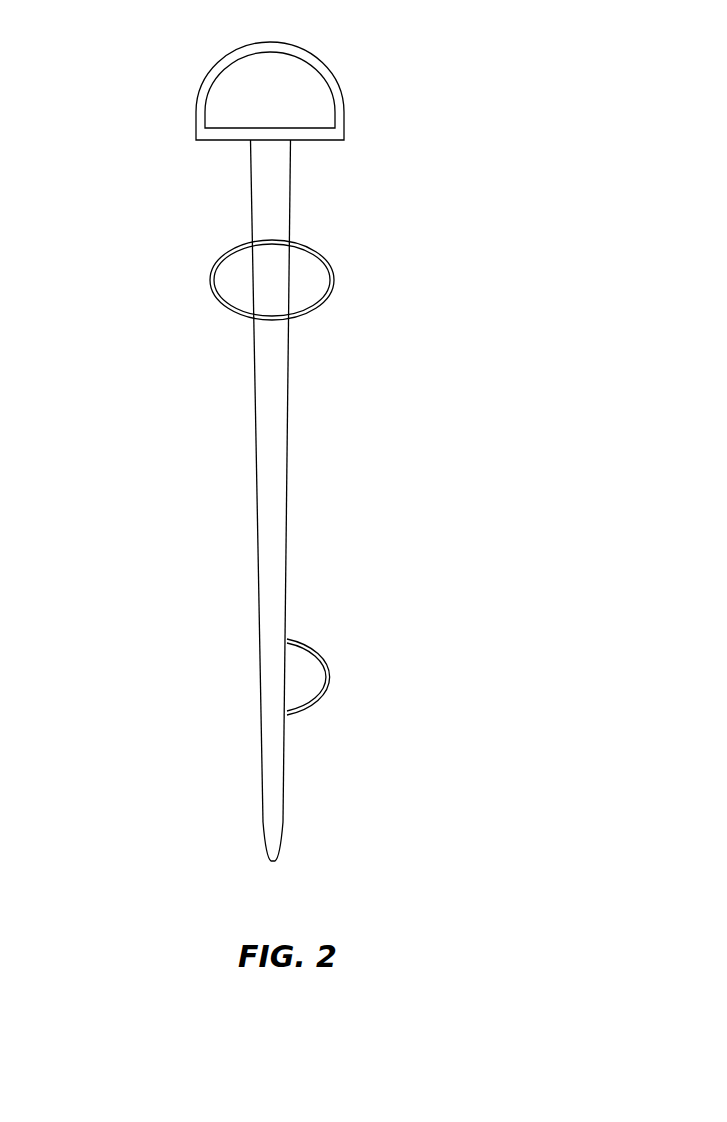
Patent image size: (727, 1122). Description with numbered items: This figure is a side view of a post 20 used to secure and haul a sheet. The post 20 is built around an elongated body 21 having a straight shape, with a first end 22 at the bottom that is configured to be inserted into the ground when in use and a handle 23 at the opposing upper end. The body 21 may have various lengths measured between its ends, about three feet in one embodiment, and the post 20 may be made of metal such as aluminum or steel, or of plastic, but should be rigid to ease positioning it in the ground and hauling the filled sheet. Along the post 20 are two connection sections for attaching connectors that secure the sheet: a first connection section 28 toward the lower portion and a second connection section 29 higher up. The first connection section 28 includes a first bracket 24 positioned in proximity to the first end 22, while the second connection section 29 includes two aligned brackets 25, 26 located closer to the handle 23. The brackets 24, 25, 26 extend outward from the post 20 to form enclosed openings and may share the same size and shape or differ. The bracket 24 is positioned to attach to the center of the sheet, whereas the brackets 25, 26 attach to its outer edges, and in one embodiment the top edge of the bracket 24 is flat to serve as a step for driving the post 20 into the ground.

The post 20 is at (308, 461).
The elongated body 21 is at (278, 430).
The first end 22 is at (275, 838).
The handle 23 is at (327, 70).
The first bracket 24 is at (330, 672).
The bracket 25 is at (328, 268).
The bracket 26 is at (220, 307).
The first connection section 28 is at (234, 634).
The second connection section 29 is at (229, 281).